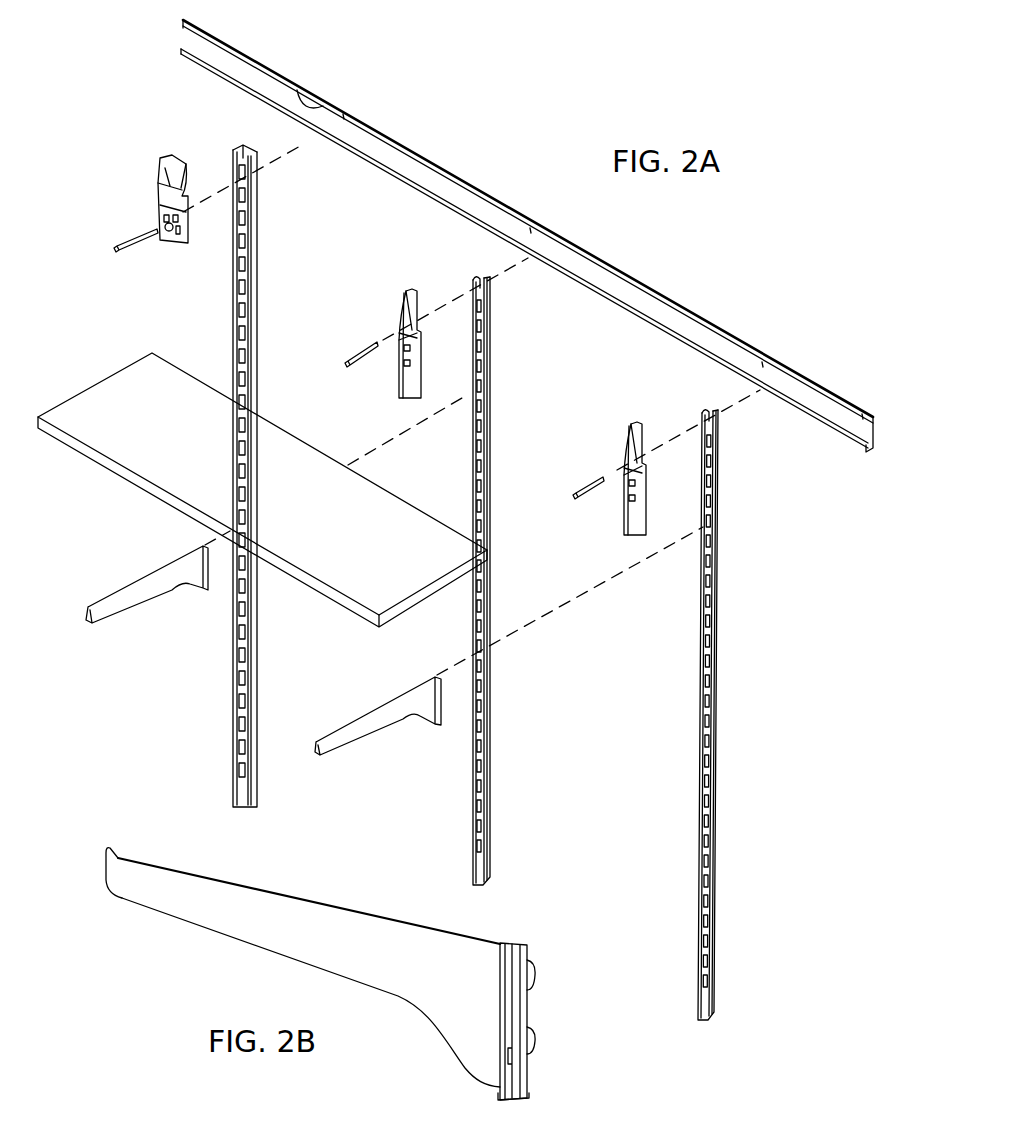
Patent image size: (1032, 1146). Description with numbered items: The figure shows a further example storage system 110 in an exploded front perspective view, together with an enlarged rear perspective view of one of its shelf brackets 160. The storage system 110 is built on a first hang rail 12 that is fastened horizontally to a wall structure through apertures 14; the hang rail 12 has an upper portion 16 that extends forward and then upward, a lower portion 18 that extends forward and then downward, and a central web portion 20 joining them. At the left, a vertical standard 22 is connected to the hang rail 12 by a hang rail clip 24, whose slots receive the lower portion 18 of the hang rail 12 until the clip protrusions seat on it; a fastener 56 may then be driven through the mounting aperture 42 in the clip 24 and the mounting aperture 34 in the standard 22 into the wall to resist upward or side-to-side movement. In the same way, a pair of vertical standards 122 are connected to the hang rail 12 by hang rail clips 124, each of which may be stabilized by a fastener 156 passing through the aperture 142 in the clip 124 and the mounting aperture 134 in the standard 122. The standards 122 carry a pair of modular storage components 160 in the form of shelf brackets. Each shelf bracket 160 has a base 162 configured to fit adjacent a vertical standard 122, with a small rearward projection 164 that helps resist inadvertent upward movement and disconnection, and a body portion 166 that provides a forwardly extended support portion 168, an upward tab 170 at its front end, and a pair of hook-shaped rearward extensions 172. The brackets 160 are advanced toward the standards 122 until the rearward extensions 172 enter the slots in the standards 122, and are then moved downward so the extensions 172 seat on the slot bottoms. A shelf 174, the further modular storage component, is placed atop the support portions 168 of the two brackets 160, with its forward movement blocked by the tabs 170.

In FIG. 2A, the storage system 110 is at (826, 254).
In FIG. 2A, the first hang rail 12 is at (705, 304).
In FIG. 2A, the apertures 14 is at (323, 103).
In FIG. 2A, the upper portion 16 is at (183, 21).
In FIG. 2A, the lower portion 18 is at (183, 50).
In FIG. 2A, the central web portion 20 is at (262, 78).
In FIG. 2A, the vertical standards 22 is at (232, 737).
In FIG. 2A, the mounting apertures 34 is at (256, 177).
In FIG. 2A, the hang rail clips 24 is at (170, 166).
In FIG. 2A, the mounting apertures 42 is at (165, 226).
In FIG. 2A, the fastener 56 is at (127, 252).
In FIG. 2A, the vertical standards 122 is at (487, 791).
In FIG. 2A, the mounting apertures 134 is at (495, 297).
In FIG. 2A, the hang rail clips 124 is at (397, 300).
In FIG. 2A, the apertures 142 is at (398, 333).
In FIG. 2A, the fastener 156 is at (352, 358).
In FIG. 2A, the shelf 174 is at (331, 590).
In FIG. 2A, the shelf brackets 160 is at (162, 600).
In FIG. 2B, the shelf brackets 160 is at (428, 1052).
In FIG. 2B, the base 162 is at (528, 1076).
In FIG. 2B, the rearward projection 164 is at (522, 1099).
In FIG. 2B, the body portion 166 is at (417, 995).
In FIG. 2B, the forwardly extended support portion 168 is at (328, 919).
In FIG. 2B, the upward tab 170 is at (122, 853).
In FIG. 2B, the rearward extensions 172 is at (535, 980).